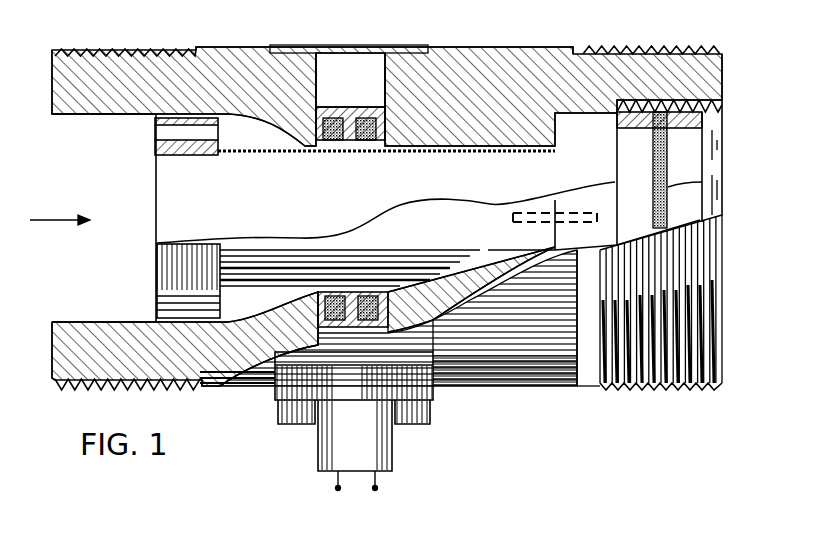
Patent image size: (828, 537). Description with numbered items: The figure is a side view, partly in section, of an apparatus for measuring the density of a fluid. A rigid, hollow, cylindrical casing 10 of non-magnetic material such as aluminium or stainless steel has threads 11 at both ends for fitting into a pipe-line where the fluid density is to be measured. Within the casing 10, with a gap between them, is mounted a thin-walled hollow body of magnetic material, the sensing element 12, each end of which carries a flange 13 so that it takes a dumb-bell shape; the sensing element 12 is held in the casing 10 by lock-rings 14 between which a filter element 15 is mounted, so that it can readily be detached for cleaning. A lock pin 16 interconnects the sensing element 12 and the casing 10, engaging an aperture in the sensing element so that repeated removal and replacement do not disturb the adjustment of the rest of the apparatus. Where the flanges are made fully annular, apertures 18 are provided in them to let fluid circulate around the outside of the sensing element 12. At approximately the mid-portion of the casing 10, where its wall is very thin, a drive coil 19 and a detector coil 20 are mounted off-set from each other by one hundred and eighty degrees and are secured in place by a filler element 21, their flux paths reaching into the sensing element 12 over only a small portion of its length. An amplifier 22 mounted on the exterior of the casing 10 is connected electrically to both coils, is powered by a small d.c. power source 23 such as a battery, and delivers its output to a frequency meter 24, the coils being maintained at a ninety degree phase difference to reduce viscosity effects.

The casing 10 is at (466, 47).
The threads 11 is at (96, 50).
The sensing element 12 is at (233, 194).
The flange 13 is at (157, 268).
The lock-rings 14 is at (686, 128).
The filter element 15 is at (667, 186).
The lock pin 16 is at (530, 213).
The apertures 18 is at (160, 133).
The drive coil 19 is at (342, 110).
The detector coil 20 is at (348, 292).
The filler element 21 is at (362, 66).
The amplifier 22 is at (433, 393).
The d.c. power source 23 is at (336, 488).
The frequency meter 24 is at (378, 488).